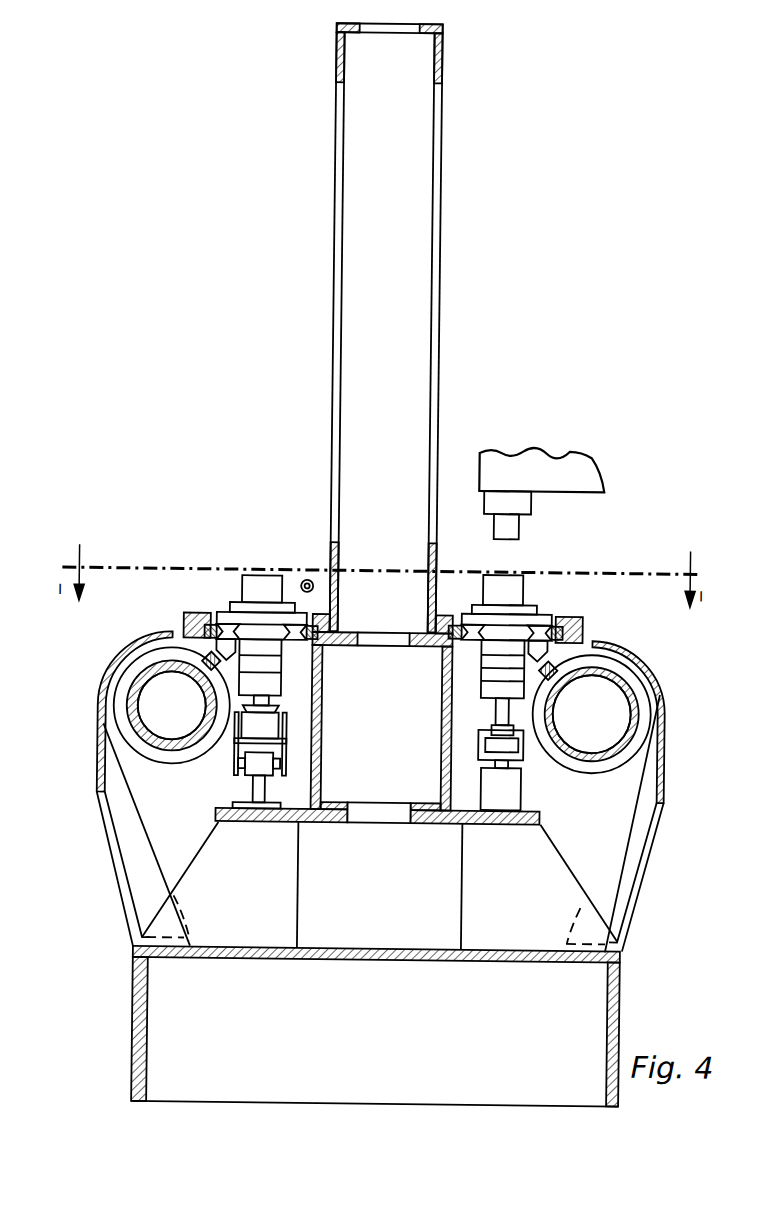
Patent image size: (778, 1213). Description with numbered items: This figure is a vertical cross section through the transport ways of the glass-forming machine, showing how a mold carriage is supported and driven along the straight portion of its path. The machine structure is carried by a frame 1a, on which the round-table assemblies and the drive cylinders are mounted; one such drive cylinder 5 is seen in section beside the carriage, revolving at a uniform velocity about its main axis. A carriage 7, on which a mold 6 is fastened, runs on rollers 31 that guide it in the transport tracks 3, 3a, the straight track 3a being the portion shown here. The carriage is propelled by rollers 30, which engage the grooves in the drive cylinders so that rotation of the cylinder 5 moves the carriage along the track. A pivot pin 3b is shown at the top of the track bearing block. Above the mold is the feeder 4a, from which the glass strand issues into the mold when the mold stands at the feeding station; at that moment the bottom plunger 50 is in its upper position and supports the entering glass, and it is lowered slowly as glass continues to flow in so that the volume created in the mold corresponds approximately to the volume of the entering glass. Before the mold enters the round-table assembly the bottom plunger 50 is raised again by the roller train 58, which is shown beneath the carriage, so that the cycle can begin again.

The frame 1a is at (333, 52).
The transport track 3 is at (318, 627).
The straight track 3a is at (440, 614).
The pivot pin 3b is at (306, 581).
The feeder 4a is at (560, 462).
The drive cylinder 5 is at (630, 710).
The mold 6 is at (504, 592).
The carriage 7 is at (507, 628).
The roller 30 is at (207, 670).
The roller 31 is at (230, 633).
The bottom plunger 50 is at (268, 708).
The roller train 58 is at (238, 746).